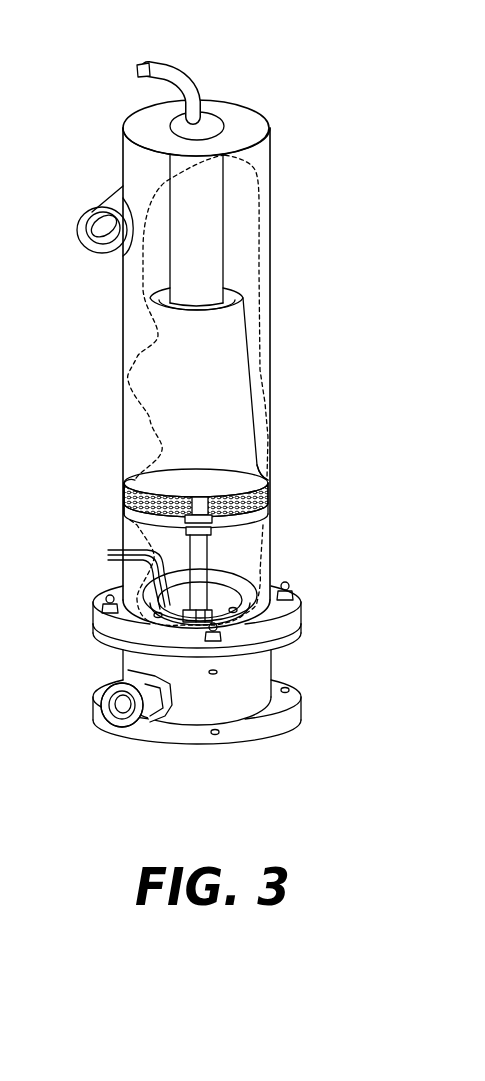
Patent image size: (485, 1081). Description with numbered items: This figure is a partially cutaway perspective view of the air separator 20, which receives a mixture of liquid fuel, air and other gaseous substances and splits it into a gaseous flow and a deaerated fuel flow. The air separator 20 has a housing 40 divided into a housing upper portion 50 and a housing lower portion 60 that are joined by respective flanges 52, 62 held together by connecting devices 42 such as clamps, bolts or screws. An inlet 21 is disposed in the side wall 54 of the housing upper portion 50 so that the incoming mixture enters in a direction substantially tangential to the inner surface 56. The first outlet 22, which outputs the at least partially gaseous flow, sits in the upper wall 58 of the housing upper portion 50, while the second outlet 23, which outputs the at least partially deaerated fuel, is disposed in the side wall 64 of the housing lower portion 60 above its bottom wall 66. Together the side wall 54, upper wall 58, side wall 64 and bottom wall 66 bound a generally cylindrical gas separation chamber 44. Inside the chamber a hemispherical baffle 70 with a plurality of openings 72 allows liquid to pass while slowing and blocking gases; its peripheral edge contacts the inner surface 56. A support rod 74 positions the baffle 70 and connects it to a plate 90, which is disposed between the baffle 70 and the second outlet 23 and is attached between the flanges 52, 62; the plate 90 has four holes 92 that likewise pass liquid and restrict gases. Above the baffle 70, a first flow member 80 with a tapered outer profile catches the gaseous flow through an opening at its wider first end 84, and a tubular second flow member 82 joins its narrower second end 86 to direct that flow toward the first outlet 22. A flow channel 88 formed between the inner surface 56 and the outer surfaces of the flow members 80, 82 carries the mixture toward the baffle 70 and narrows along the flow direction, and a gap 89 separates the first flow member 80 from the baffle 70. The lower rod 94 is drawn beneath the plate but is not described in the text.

The air separator 20 is at (302, 92).
The inlet 21 is at (100, 206).
The first outlet 22 is at (160, 64).
The second outlet 23 is at (128, 728).
The housing 40 is at (302, 358).
The connecting devices 42 is at (291, 585).
The gas separation chamber 44 is at (245, 210).
The housing upper portion 50 is at (273, 138).
The flange 52 is at (302, 608).
The side wall 54 is at (132, 162).
The inner surface 56 is at (242, 183).
The upper wall 58 is at (145, 117).
The housing lower portion 60 is at (120, 665).
The flange 62 is at (302, 633).
The side wall 64 is at (265, 665).
The bottom wall 66 is at (293, 720).
The baffle 70 is at (260, 488).
The openings 72 is at (137, 487).
The support rod 74 is at (215, 540).
The first flow member 80 is at (158, 377).
The second flow member 82 is at (218, 247).
The first end 84 is at (253, 460).
The second end 86 is at (248, 290).
The flow channel 88 is at (255, 380).
The gap 89 is at (257, 472).
The plate 90 is at (237, 600).
The holes 92 is at (121, 576).
The support rod 94 is at (212, 597).